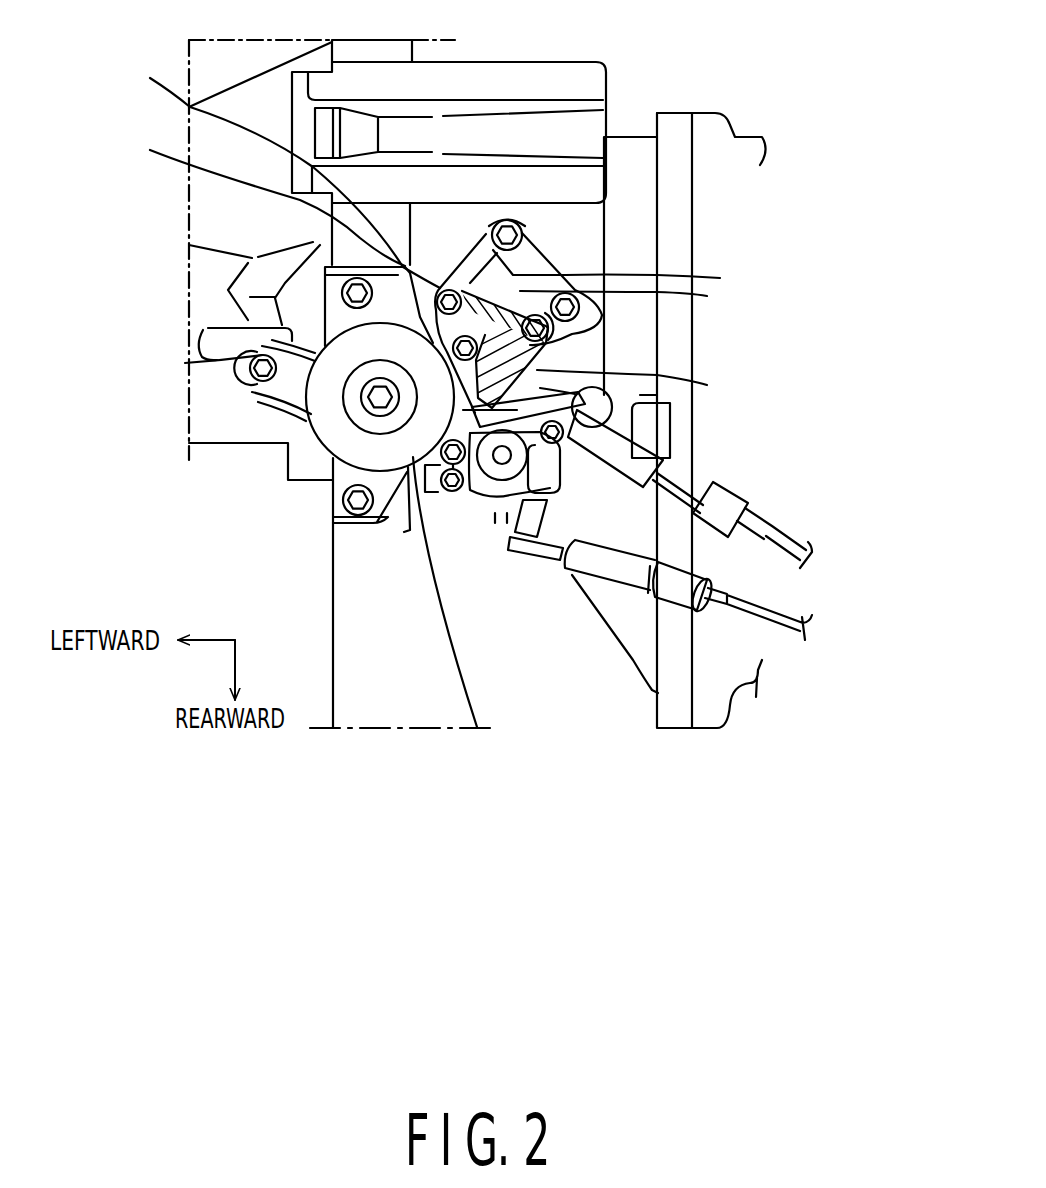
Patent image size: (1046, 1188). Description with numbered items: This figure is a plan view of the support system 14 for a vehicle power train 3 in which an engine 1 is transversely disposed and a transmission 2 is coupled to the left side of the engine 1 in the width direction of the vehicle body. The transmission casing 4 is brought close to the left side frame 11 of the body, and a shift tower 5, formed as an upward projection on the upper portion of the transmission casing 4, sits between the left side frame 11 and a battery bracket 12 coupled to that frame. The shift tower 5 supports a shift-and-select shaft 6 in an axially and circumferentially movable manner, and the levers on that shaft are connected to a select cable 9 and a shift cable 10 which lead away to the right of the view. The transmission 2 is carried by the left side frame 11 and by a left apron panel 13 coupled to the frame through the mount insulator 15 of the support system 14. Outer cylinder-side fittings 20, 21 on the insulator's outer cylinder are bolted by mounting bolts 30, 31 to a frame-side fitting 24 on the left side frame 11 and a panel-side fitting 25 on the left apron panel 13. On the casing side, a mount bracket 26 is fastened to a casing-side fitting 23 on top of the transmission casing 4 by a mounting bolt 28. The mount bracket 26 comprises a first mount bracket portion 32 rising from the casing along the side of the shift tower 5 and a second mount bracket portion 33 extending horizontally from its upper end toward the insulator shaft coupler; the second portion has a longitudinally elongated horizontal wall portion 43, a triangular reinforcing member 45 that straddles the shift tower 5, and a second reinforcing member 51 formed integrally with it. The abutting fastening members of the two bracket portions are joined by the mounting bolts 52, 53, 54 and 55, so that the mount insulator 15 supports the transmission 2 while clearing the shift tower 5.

The engine 1 is at (738, 130).
The transmission 2 is at (637, 137).
The power train 3 is at (785, 30).
The transmission casing 4 is at (642, 175).
The shift tower 5 is at (483, 477).
The shift-and-select shaft 6 is at (548, 530).
The select cable 9 is at (775, 617).
The shift cable 10 is at (787, 547).
The left side frame 11 is at (347, 663).
The battery bracket 12 is at (597, 80).
The left apron panel 13 is at (210, 231).
The support system 14 is at (255, 469).
The mount insulator 15 is at (305, 425).
The outer cylinder-side fitting 20 is at (325, 316).
The outer cylinder-side fitting 21 is at (252, 397).
The casing-side fitting 23 is at (552, 257).
The frame-side fitting 24 is at (363, 267).
The panel-side fitting 25 is at (248, 380).
The mount bracket 26 is at (832, 315).
The mounting bolt 28 is at (507, 220).
The mounting bolt 30 is at (340, 288).
The mounting bolt 31 is at (262, 345).
The first mount bracket portion 32 is at (707, 296).
The second mount bracket portion 33 is at (567, 358).
The horizontal wall portion 43 is at (645, 452).
The reinforcing member 45 is at (612, 399).
The second reinforcing member 51 is at (540, 238).
The mounting bolt 52 is at (453, 492).
The mounting bolt 53 is at (560, 342).
The mounting bolt 54 is at (279, 173).
The mounting bolt 55 is at (258, 194).